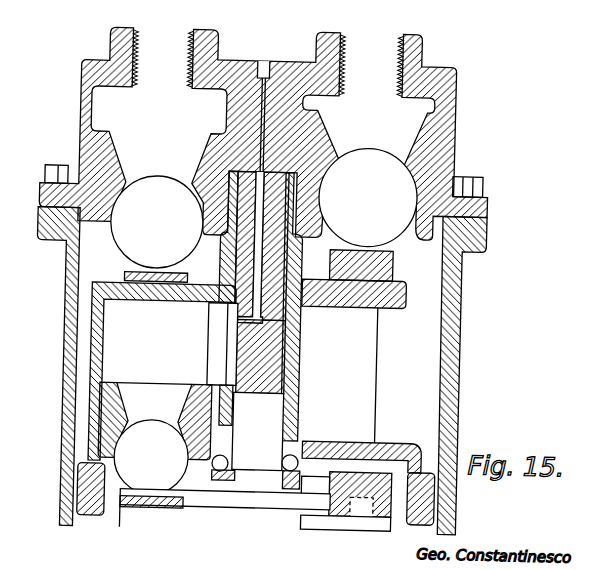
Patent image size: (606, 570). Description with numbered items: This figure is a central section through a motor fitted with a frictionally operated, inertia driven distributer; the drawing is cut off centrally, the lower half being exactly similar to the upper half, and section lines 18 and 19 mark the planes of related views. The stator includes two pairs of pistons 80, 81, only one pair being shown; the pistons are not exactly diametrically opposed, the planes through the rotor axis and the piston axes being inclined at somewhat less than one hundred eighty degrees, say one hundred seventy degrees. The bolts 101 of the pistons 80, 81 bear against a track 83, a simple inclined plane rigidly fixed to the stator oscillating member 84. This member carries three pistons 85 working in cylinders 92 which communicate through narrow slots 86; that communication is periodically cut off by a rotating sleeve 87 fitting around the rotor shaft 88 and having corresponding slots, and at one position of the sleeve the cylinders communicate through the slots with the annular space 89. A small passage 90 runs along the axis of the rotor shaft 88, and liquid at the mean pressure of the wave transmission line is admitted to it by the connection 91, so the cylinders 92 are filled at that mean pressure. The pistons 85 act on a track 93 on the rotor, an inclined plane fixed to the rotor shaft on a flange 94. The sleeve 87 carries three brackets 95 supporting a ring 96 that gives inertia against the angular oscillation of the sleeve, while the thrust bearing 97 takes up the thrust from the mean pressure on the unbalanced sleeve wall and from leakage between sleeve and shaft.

The section line 18 is at (460, 448).
The section line / lower housing 19 is at (506, 313).
The stator piston 80 is at (101, 148).
The stator piston 81 is at (424, 152).
The track 83 is at (391, 266).
The stator oscillating member 84 is at (402, 294).
The piston 85 is at (110, 400).
The narrow slot 86 is at (218, 325).
The rotating sleeve 87 is at (289, 345).
The rotor shaft 88 is at (243, 444).
The annular space 89 is at (237, 358).
The small passage 90 is at (258, 231).
The connection 91 is at (258, 66).
The cylinder 92 is at (108, 353).
The track 93 is at (148, 509).
The flange 94 is at (500, 531).
The bracket 95 is at (393, 441).
The ring 96 is at (430, 500).
The thrust bearing 97 is at (234, 482).
The bolt 101 is at (148, 189).